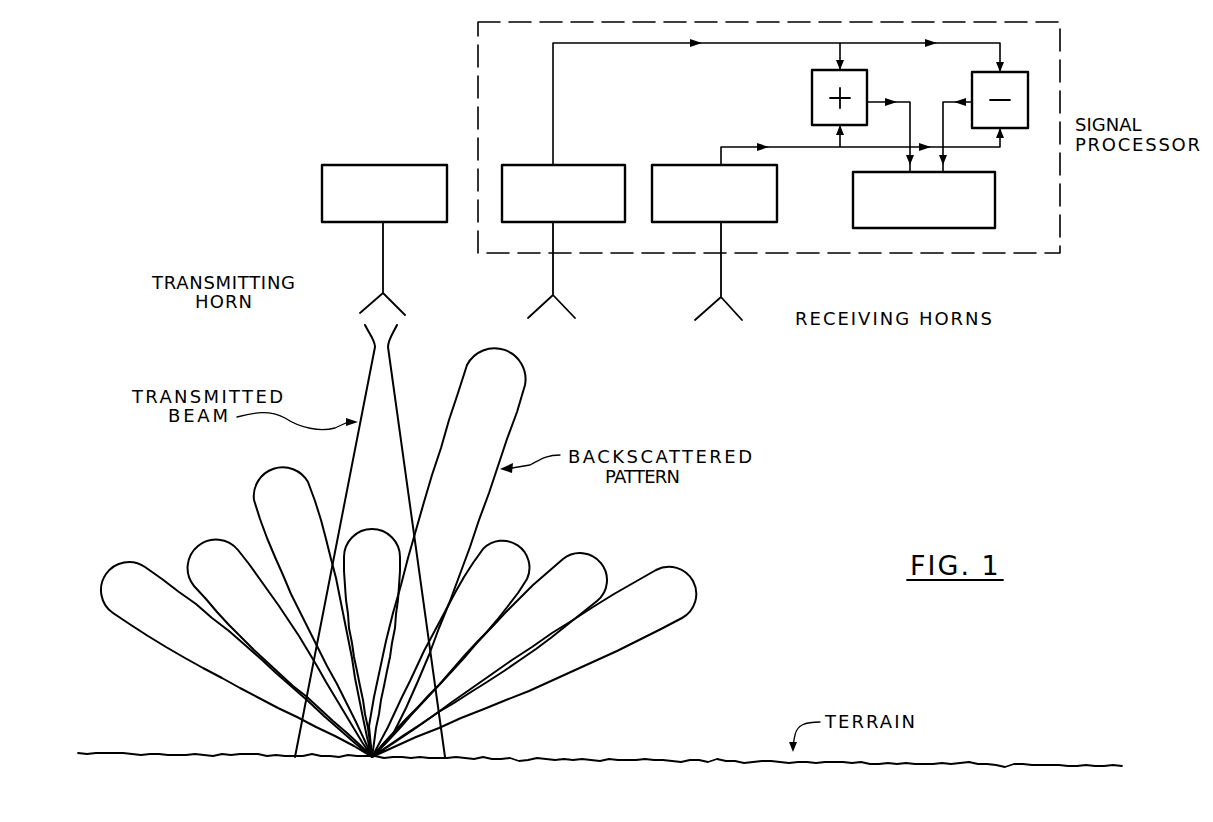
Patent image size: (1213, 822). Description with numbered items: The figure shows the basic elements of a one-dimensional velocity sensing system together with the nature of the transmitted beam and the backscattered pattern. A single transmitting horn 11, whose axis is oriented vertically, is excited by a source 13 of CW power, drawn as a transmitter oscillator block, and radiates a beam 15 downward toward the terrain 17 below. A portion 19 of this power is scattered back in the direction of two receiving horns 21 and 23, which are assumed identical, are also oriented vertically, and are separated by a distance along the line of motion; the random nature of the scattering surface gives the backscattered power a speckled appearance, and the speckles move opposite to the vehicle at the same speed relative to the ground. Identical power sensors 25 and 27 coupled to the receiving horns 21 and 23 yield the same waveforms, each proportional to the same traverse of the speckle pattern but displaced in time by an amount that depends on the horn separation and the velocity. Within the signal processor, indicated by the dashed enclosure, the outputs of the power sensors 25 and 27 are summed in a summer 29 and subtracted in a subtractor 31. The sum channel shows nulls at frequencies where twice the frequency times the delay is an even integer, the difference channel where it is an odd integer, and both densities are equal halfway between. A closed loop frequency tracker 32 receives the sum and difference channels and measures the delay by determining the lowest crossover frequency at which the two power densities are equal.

The transmitting horn 11 is at (368, 303).
The source of CW power 13 is at (355, 165).
The beam 15 is at (369, 378).
The terrain 17 is at (690, 758).
The backscattered portion 19 is at (526, 384).
The receiving horn 21 is at (565, 308).
The receiving horn 23 is at (737, 311).
The power sensor 25 is at (572, 165).
The power sensor 27 is at (703, 165).
The summer 29 is at (812, 90).
The subtractor 31 is at (1028, 92).
The closed loop frequency tracker 32 is at (995, 202).